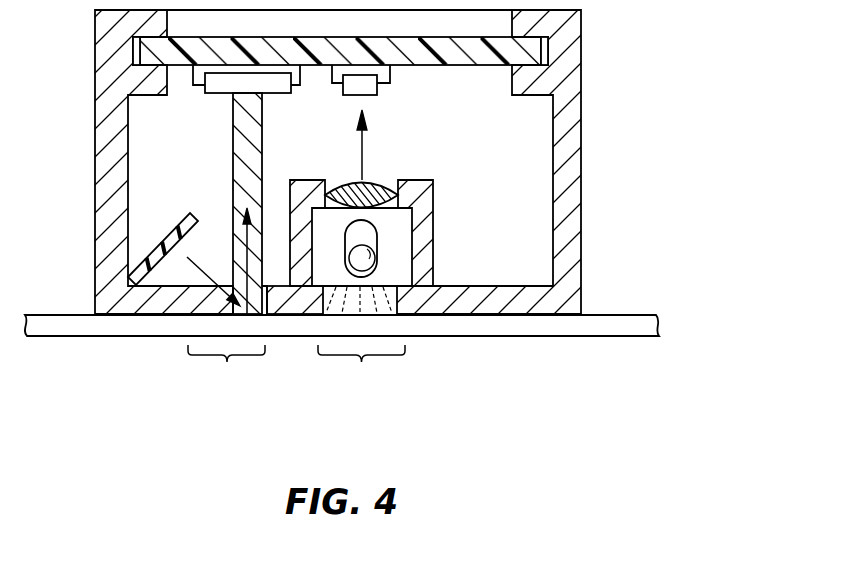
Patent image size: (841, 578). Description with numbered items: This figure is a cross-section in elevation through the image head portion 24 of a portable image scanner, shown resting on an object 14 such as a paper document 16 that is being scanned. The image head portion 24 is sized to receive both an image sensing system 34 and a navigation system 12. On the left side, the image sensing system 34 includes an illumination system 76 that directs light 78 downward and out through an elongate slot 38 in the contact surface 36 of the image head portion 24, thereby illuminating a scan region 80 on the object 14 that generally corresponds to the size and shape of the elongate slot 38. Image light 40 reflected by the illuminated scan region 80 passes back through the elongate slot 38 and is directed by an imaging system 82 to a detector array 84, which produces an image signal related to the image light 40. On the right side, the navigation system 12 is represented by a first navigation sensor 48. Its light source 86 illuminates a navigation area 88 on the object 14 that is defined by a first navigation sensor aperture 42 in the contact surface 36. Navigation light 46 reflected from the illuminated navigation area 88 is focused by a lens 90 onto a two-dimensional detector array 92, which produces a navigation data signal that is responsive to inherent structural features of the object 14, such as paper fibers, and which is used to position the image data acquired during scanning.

The navigation system 12 is at (531, 152).
The object 14 is at (676, 322).
The document 16 is at (630, 315).
The image head portion 24 is at (599, 50).
The image sensing system 34 is at (145, 147).
The contact surface 36 is at (558, 318).
The elongate slot 38 is at (167, 289).
The image light 40 is at (250, 315).
The first navigation sensor aperture 42 is at (397, 288).
The navigation light 46 is at (358, 157).
The first navigation sensor 48 is at (451, 223).
The illumination system 76 is at (193, 214).
The light 78 is at (203, 262).
The scan region 80 is at (226, 377).
The imaging system 82 is at (262, 116).
The detector array 84 is at (217, 93).
The light source 86 is at (377, 253).
The navigation area 88 is at (361, 376).
The lens 90 is at (383, 182).
The two-dimensional detector array 92 is at (377, 95).